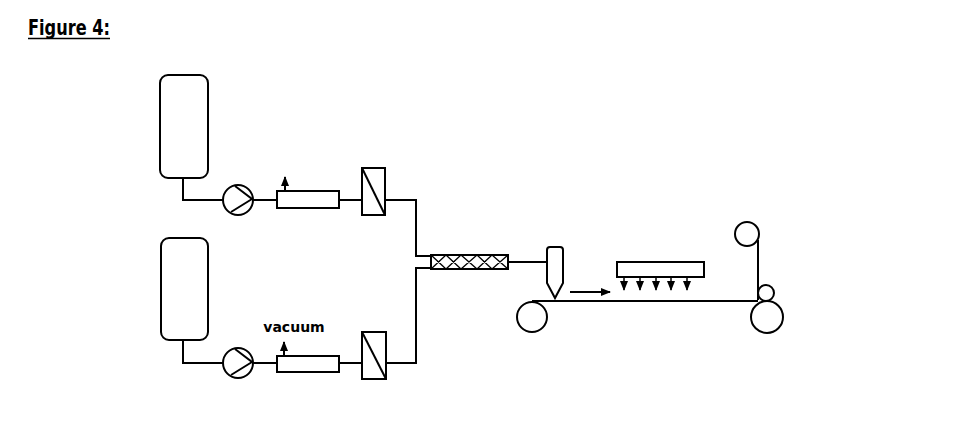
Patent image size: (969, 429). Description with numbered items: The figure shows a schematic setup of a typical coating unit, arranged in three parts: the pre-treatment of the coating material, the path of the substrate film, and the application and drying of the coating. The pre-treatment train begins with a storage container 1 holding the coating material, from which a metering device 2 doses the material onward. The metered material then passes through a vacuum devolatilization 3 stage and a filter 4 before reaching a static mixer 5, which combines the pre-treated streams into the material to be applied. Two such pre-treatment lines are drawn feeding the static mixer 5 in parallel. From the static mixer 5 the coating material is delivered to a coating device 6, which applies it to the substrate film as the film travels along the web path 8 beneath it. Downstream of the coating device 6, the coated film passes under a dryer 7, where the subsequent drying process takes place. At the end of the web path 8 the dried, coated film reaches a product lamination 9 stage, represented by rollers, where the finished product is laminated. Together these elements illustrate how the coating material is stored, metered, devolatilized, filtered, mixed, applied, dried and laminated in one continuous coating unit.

The storage container 1 is at (175, 115).
The metering device 2 is at (239, 176).
The vacuum devolatilization 3 is at (331, 184).
The filter 4 is at (395, 158).
The static mixer 5 is at (462, 243).
The coating device 6 is at (564, 237).
The dryer 7 is at (667, 253).
The web path 8 is at (564, 311).
The product lamination 9 is at (760, 223).